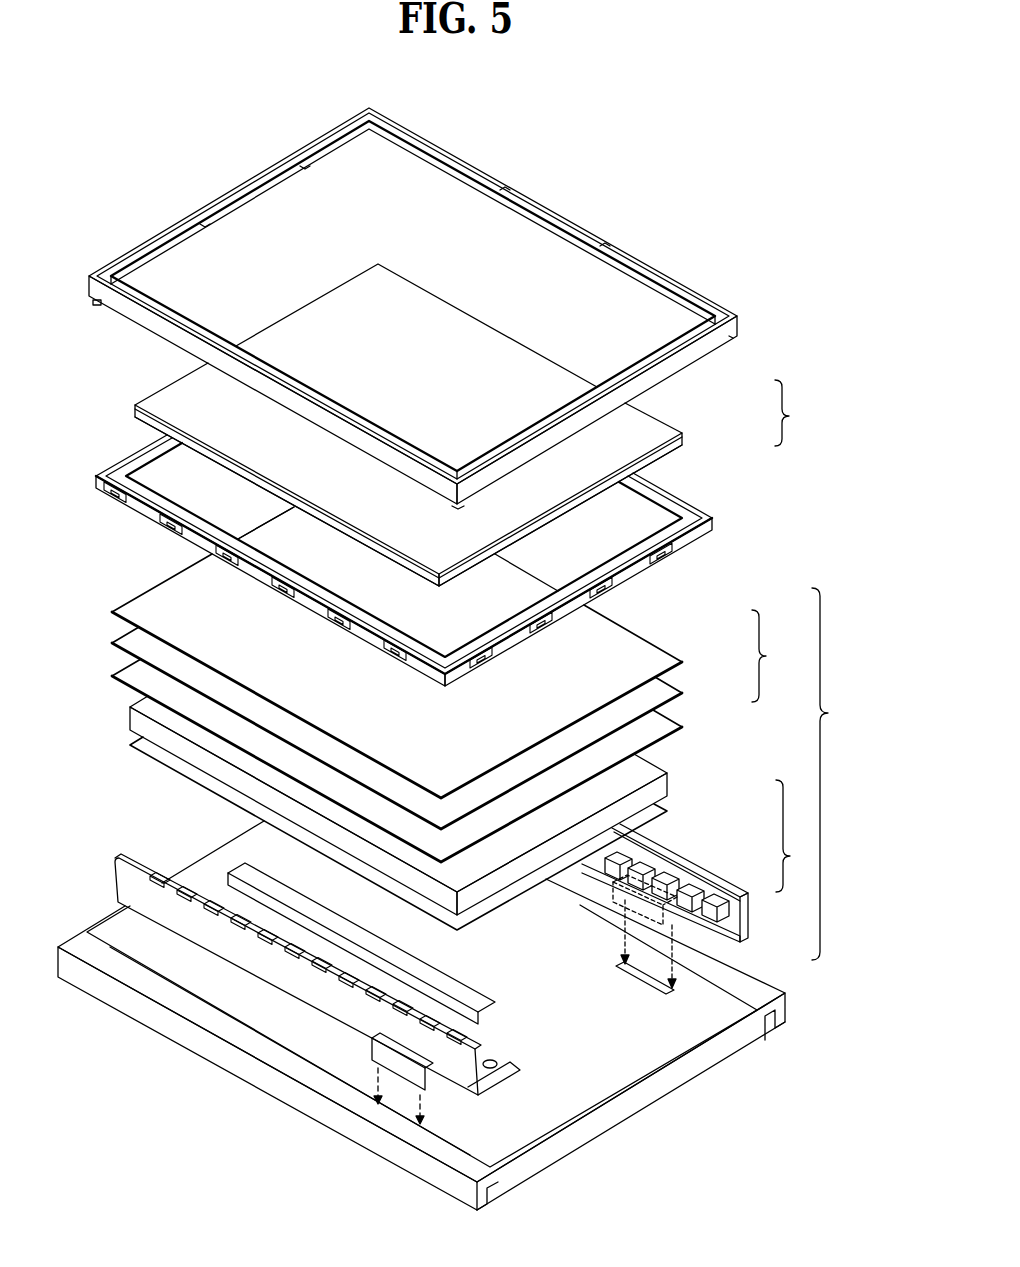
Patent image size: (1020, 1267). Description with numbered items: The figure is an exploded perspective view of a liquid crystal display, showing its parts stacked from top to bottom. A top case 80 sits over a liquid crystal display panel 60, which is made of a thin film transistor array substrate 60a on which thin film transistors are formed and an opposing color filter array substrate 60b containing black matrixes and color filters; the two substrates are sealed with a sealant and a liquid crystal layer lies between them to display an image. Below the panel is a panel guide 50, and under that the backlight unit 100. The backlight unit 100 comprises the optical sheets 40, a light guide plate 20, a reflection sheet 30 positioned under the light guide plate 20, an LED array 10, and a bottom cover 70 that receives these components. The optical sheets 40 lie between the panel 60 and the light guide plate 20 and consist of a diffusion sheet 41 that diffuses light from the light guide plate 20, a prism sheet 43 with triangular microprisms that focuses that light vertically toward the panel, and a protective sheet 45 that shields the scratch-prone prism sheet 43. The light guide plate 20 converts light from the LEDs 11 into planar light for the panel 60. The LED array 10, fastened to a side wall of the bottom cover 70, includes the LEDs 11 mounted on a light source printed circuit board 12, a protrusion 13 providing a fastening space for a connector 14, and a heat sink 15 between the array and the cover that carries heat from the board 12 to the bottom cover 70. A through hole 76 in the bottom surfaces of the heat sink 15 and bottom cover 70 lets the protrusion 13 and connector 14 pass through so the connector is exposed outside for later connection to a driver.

The backlight unit 100 is at (463, 659).
The top case 80 is at (700, 304).
The liquid crystal display panel 60 is at (474, 474).
The thin film transistor array substrate 60a is at (685, 442).
The color filter array substrate 60b is at (685, 433).
The panel guide 50 is at (652, 501).
The optical sheets 40 is at (452, 708).
The protective sheet 45 is at (662, 660).
The prism sheet 43 is at (662, 693).
The diffusion sheet 41 is at (662, 727).
The light guide plate 20 is at (645, 775).
The reflection sheet 30 is at (655, 818).
The LED array 10 is at (697, 883).
The LEDs 11 is at (715, 905).
The light source printed circuit board 12 is at (668, 882).
The protrusion 13 is at (658, 870).
The connector 14 is at (650, 858).
The heat sink 15 is at (640, 846).
The bottom cover 70 is at (752, 958).
The through hole 76 is at (648, 992).